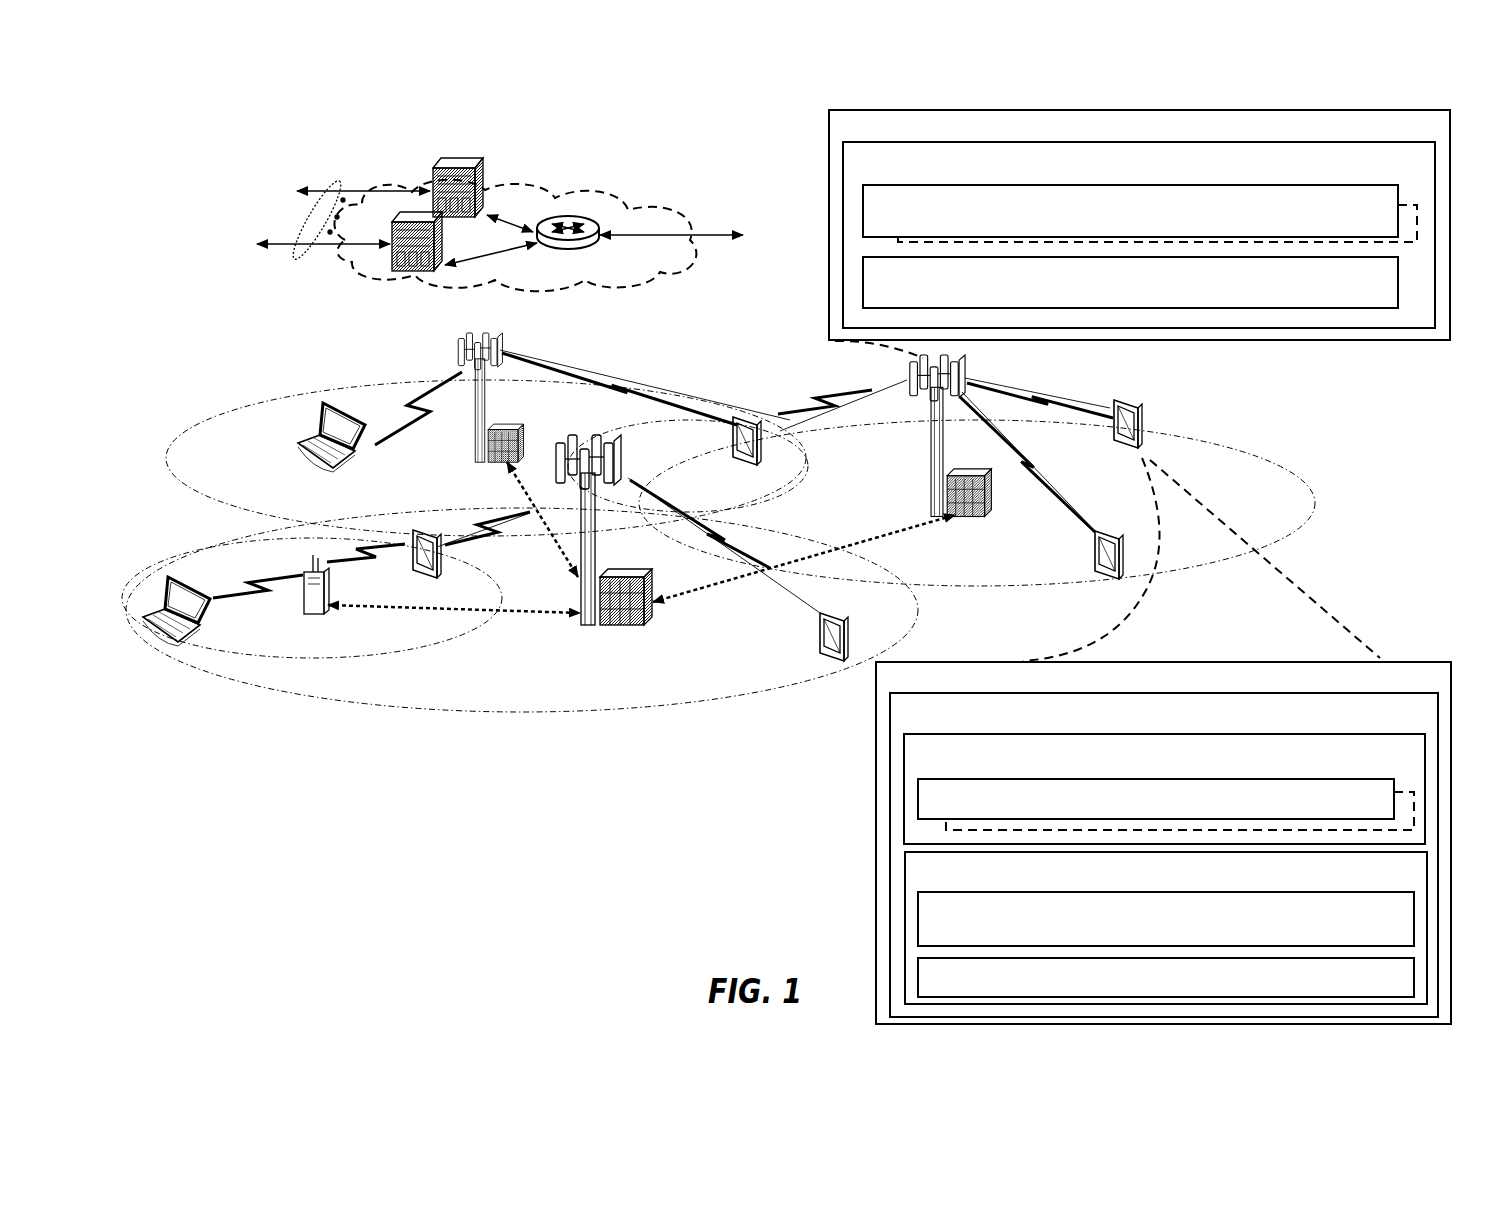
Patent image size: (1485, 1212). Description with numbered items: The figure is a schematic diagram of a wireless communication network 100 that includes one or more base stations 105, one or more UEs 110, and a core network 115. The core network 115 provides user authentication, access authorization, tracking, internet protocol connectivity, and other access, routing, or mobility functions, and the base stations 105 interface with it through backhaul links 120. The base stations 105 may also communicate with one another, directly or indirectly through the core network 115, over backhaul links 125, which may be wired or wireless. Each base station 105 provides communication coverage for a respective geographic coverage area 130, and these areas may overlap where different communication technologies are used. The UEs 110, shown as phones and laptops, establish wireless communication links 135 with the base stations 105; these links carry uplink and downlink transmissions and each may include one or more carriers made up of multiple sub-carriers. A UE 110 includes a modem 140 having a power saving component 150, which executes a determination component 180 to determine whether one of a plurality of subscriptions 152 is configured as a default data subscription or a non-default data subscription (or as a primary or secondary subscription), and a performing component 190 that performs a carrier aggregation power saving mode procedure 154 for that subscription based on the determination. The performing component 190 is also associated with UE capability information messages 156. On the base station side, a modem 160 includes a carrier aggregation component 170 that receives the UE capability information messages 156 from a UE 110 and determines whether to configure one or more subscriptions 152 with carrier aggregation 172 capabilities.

The wireless communication network 100 is at (183, 176).
The base station 105 is at (478, 428).
The UE 110 is at (343, 462).
The core network 115 is at (600, 280).
The backhaul links 120 is at (303, 258).
The backhaul links 125 is at (552, 540).
The geographic coverage area 130 is at (223, 503).
The wireless communication links 135 is at (416, 398).
The modem 140 is at (1163, 843).
The power saving component 150 is at (1164, 855).
The subscriptions 152 is at (1140, 507).
The carrier aggregation power saving mode procedure 154 is at (1166, 919).
The UE capability information messages 156 is at (1166, 977).
The modem 160 is at (1139, 225).
The carrier aggregation component 170 is at (1139, 235).
The carrier aggregation 172 is at (1130, 282).
The determination component 180 is at (1164, 789).
The performing component 190 is at (1166, 928).